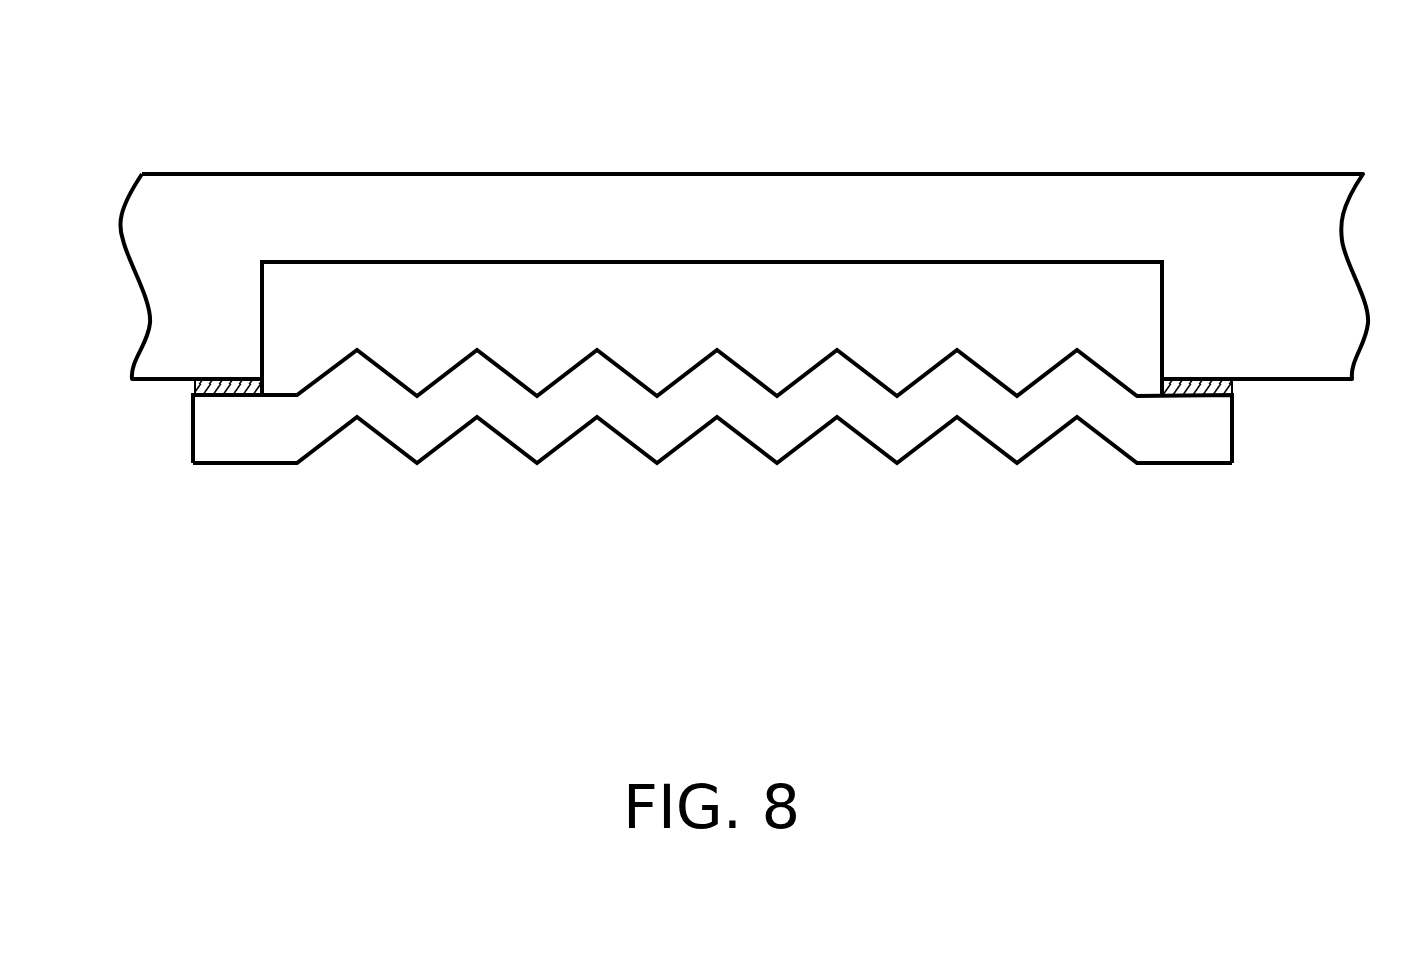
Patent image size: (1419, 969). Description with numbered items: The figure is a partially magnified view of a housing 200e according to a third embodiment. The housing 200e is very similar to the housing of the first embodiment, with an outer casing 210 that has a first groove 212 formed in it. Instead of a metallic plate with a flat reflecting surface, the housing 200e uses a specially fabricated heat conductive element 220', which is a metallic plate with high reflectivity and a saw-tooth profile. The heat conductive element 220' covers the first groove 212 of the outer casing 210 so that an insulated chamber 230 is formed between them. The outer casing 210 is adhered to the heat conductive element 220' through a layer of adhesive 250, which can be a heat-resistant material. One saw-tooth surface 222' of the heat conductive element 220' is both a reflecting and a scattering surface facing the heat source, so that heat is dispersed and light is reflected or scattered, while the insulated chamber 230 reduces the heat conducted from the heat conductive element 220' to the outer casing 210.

The housing 200e is at (1292, 105).
The outer casing 210 is at (1178, 227).
The first groove 212 is at (280, 331).
The heat conductive element 220' is at (740, 286).
The saw-tooth surface 222' is at (712, 503).
The insulated chamber 230 is at (543, 327).
The adhesive 250 is at (232, 379).